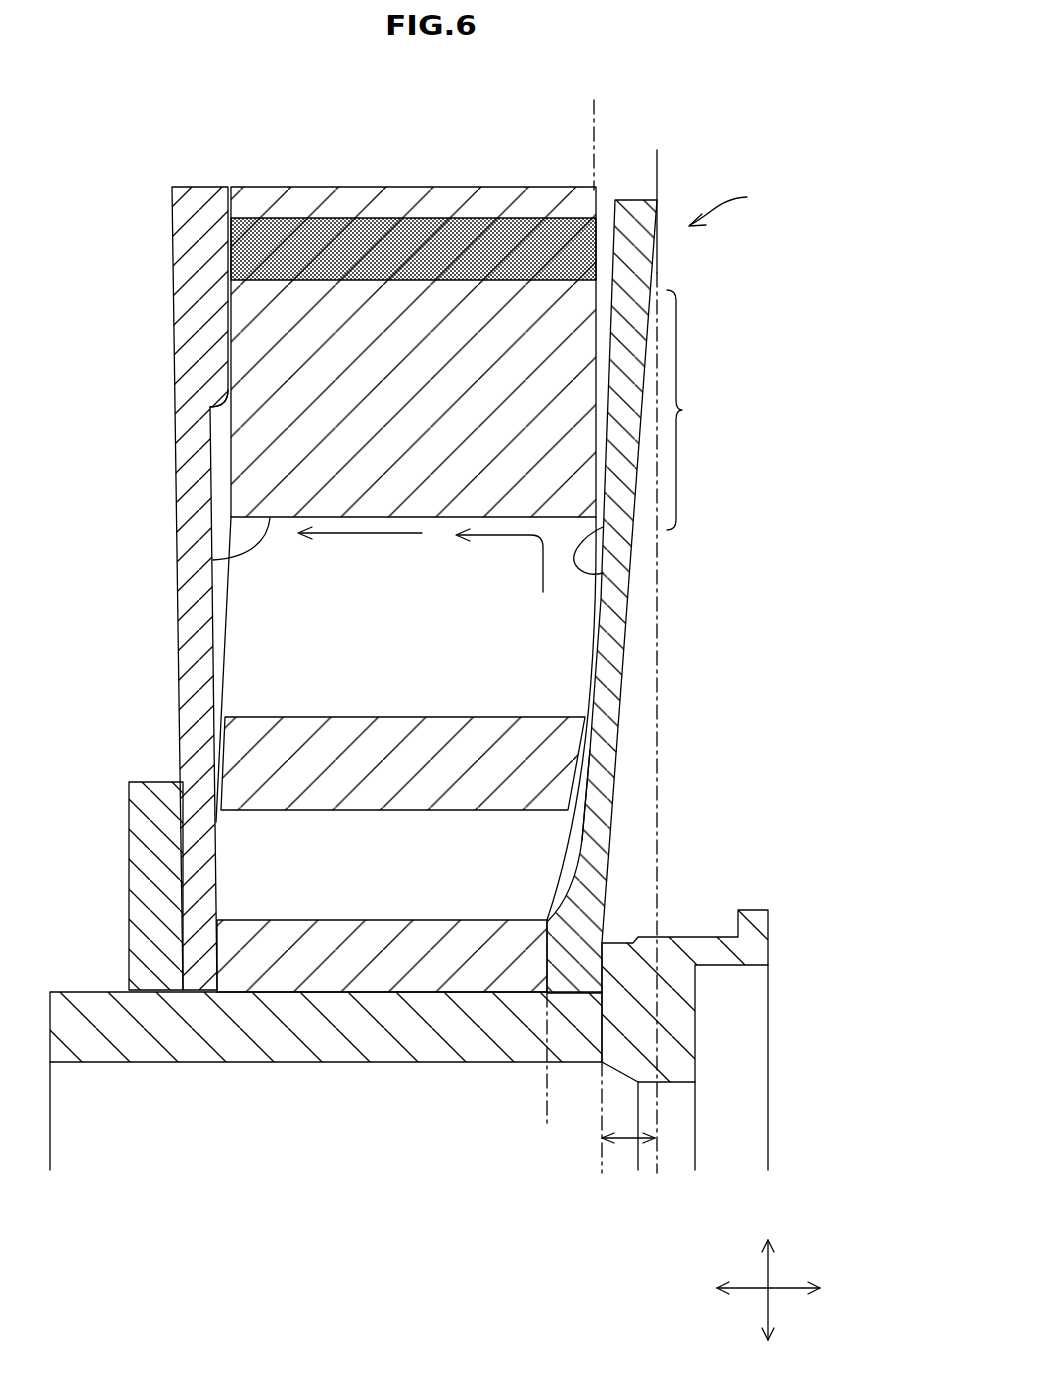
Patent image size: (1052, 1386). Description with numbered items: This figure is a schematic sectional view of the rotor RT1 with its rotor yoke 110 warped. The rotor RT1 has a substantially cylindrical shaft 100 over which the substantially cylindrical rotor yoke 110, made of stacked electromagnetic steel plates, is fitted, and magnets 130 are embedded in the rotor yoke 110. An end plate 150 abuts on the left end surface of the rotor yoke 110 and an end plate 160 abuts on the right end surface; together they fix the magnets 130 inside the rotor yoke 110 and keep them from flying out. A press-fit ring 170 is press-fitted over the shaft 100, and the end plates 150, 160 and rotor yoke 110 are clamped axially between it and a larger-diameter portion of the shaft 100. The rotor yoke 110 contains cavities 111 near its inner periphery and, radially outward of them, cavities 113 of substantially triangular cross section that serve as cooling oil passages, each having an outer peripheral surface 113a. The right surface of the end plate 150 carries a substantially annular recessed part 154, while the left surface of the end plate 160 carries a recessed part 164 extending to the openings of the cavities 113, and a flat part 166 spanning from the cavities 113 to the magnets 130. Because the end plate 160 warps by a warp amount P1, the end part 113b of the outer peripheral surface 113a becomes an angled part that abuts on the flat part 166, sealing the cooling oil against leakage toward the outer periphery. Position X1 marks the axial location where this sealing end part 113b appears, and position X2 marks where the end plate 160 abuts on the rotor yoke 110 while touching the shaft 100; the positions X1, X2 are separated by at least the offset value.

The shaft 100 is at (90, 1012).
The rotor yoke 110 is at (383, 313).
The cavity 111 is at (520, 856).
The cavity 113 is at (557, 652).
The outer peripheral surface 113a is at (213, 560).
The end part 113b is at (603, 573).
The magnet 130 is at (279, 248).
The end plate 150 is at (193, 200).
The recessed part 154 is at (210, 462).
The end plate 160 is at (632, 200).
The recessed part 164 is at (595, 800).
The flat part 166 is at (701, 410).
The press-fit ring 170 is at (140, 876).
The axial-direction position X1 is at (597, 130).
The position X2 is at (545, 1075).
The warp amount P1 is at (622, 1145).
The rotor RT1 is at (744, 196).